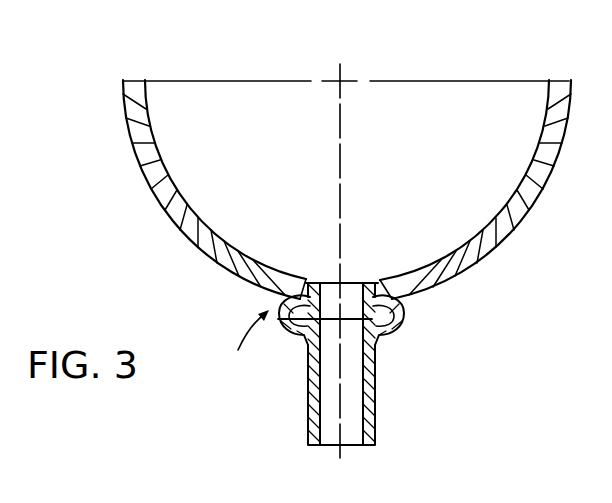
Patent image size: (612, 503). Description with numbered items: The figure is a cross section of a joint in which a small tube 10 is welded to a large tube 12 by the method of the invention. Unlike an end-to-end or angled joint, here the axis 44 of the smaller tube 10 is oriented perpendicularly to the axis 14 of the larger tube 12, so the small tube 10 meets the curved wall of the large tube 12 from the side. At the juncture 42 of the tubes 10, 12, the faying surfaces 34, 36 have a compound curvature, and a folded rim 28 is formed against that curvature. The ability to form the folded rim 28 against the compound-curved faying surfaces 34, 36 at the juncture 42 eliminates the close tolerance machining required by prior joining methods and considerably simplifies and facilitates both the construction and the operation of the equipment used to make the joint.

The small tube 10 is at (377, 418).
The large tube 12 is at (512, 230).
The axis of the larger tube 14 is at (337, 76).
The folded rim 28 is at (400, 321).
The faying surface 34 is at (395, 302).
The faying surface 36 is at (296, 292).
The juncture 42 is at (237, 347).
The axis of the smaller tube 44 is at (330, 428).